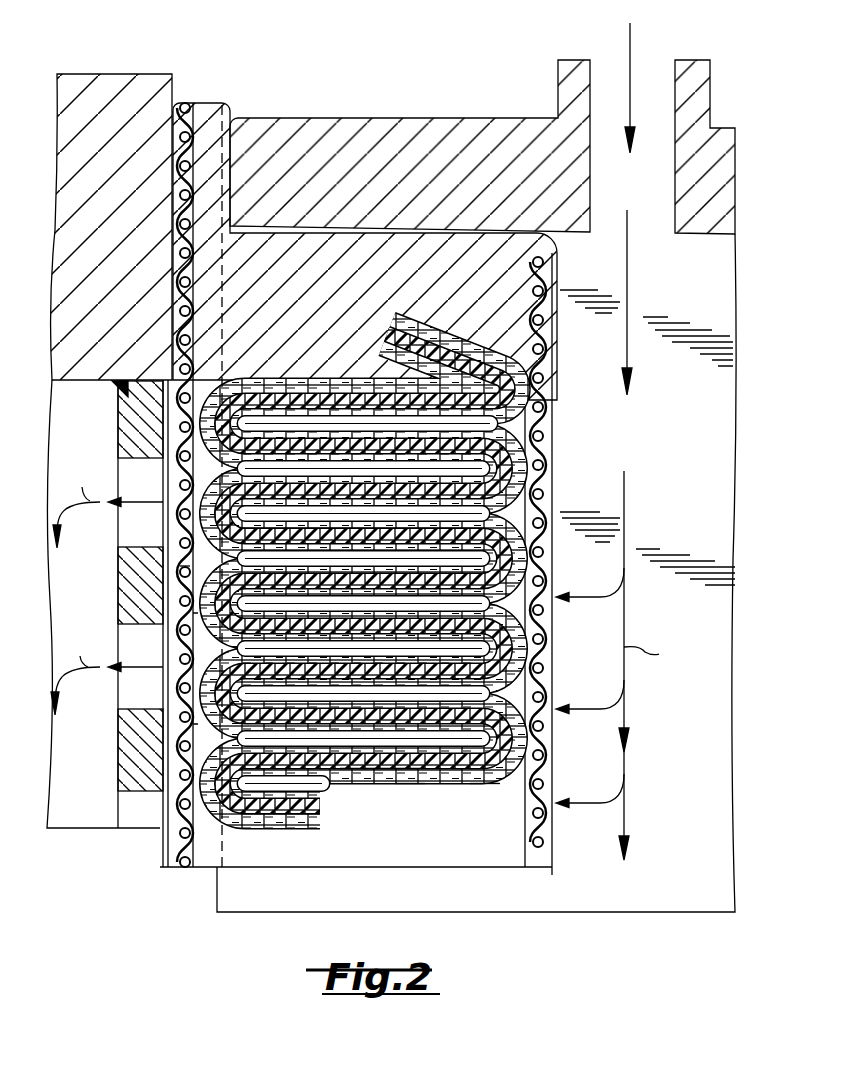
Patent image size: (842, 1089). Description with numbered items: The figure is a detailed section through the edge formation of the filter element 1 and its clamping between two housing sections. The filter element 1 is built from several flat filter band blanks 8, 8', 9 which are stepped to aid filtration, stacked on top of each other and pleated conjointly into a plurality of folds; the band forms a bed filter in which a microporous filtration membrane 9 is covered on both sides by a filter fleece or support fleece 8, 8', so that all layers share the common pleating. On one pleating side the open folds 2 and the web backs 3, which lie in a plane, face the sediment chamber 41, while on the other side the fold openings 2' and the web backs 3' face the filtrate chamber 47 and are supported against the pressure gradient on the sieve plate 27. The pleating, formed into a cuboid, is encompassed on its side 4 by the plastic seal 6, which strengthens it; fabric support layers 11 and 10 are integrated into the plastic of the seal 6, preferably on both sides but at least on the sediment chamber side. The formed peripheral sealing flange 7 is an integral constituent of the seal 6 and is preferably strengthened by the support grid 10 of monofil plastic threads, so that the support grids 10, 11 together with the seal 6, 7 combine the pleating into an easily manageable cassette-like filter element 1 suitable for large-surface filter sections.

The filter element 1 is at (432, 806).
The open folds 2 is at (419, 592).
The fold openings 2' is at (130, 572).
The web backs 3 is at (410, 570).
The web backs 3' is at (135, 659).
The side of the pleating 4 is at (398, 320).
The plastic seal 6 is at (318, 250).
The sealing flange 7 is at (208, 125).
The filter fleece or support fleece 8 is at (380, 806).
The filter fleece or support fleece 8' is at (485, 815).
The microporous filtration membrane 9 is at (408, 775).
The support grid 10 is at (175, 856).
The fabric support layer 11 is at (542, 858).
The sieve plate 27 is at (138, 770).
The sediment chamber 41 is at (637, 447).
The filtrate chamber 47 is at (92, 448).